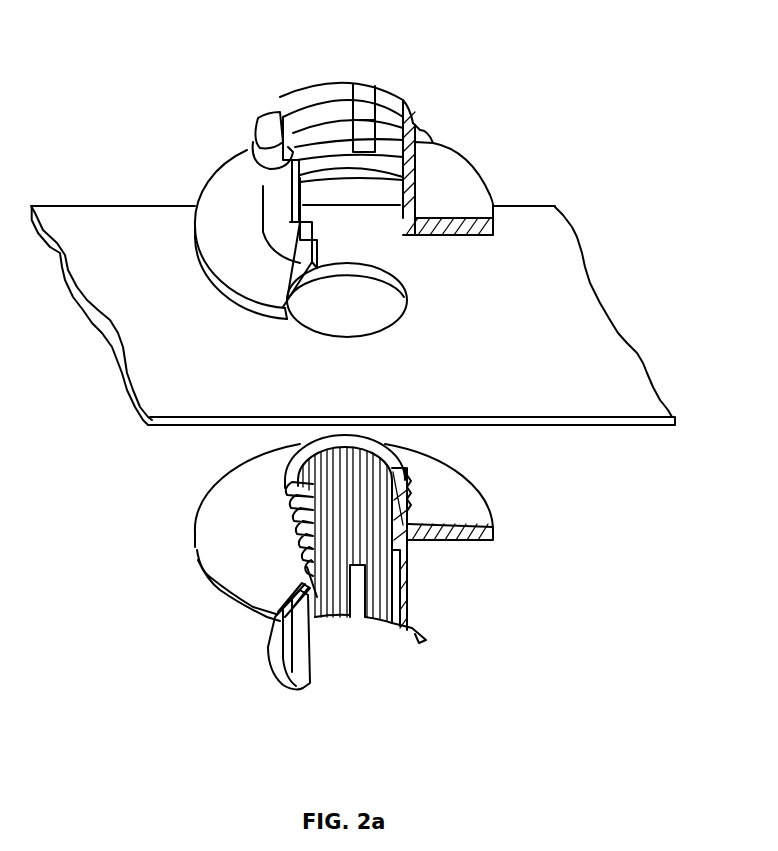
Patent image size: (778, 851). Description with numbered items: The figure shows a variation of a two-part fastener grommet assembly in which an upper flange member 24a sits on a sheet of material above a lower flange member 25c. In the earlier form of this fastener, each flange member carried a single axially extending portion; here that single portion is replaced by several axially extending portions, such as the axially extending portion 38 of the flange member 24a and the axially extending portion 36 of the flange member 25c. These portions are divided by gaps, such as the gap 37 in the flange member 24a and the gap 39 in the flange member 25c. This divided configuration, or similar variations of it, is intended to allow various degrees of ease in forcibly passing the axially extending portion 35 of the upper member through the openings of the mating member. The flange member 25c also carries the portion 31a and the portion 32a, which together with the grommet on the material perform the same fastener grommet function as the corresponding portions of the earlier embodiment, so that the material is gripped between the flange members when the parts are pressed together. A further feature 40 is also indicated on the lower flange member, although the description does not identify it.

The flange member 24a is at (572, 208).
The flange member 25c is at (420, 586).
The portion 31a is at (403, 112).
The portion 32a is at (430, 142).
The axially extending portion 35 is at (340, 166).
The axially extending portion 36 is at (290, 646).
The gap 37 is at (372, 72).
The axially extending portion 38 is at (327, 117).
The gap 39 is at (363, 636).
The rib 40 is at (387, 593).